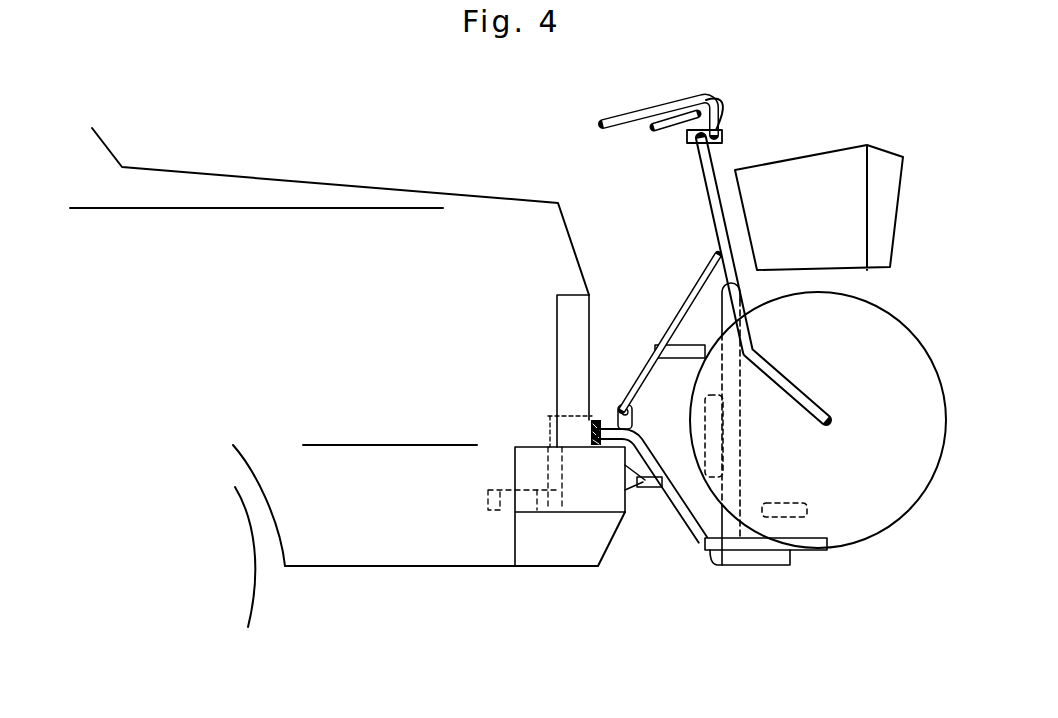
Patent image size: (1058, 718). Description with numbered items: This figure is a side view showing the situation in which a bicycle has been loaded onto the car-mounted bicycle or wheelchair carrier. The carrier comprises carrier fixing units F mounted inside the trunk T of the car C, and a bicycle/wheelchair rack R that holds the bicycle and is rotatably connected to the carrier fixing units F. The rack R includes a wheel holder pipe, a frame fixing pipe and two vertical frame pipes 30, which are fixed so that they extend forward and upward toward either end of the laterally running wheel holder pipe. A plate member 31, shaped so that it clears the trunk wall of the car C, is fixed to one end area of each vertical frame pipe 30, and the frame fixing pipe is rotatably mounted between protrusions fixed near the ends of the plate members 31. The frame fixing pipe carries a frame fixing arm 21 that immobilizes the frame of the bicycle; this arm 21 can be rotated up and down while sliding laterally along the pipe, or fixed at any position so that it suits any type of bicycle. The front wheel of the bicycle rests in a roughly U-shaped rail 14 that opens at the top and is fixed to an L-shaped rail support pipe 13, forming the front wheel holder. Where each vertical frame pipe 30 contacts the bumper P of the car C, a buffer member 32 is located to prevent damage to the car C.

The rail support pipe 13 is at (762, 567).
The rail 14 is at (806, 552).
The frame fixing arm 21 is at (692, 290).
The vertical frame pipe 30 is at (663, 460).
The plate member 31 is at (574, 414).
The buffer member 32 is at (645, 490).
The car C is at (215, 98).
The carrier fixing unit F is at (522, 553).
The bumper P is at (628, 493).
The bicycle/wheelchair rack R is at (740, 642).
The trunk T is at (505, 392).